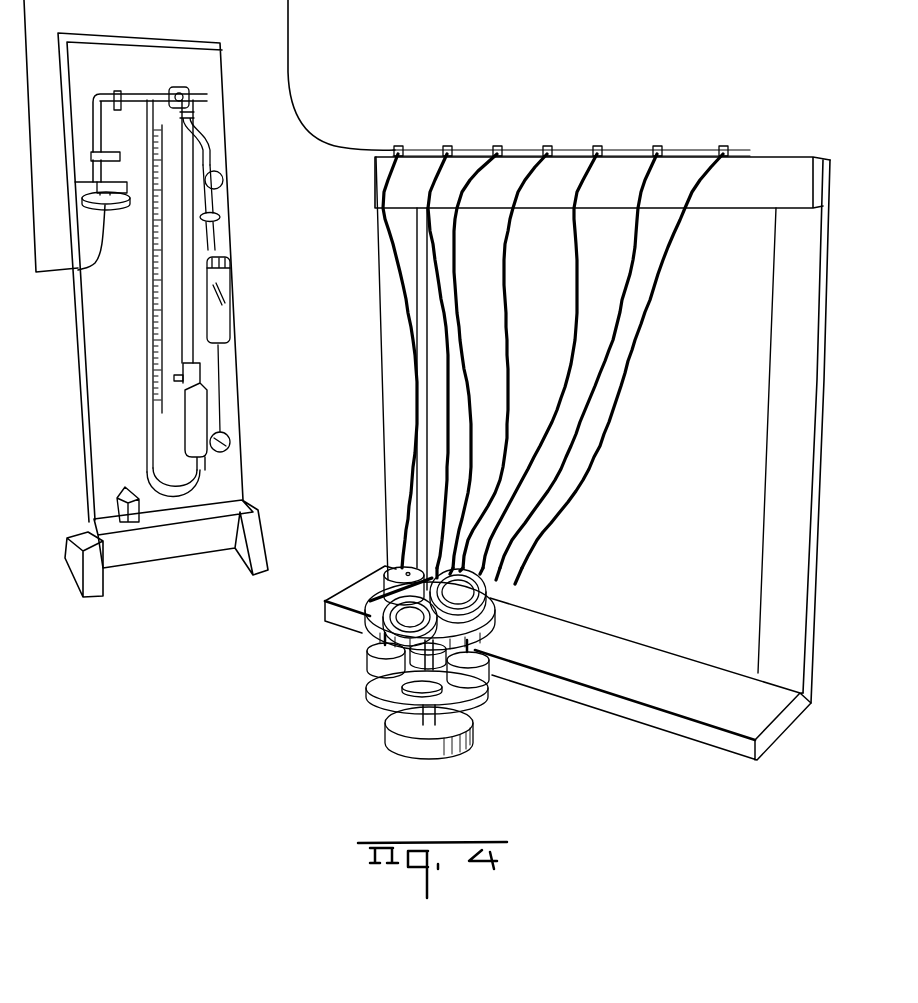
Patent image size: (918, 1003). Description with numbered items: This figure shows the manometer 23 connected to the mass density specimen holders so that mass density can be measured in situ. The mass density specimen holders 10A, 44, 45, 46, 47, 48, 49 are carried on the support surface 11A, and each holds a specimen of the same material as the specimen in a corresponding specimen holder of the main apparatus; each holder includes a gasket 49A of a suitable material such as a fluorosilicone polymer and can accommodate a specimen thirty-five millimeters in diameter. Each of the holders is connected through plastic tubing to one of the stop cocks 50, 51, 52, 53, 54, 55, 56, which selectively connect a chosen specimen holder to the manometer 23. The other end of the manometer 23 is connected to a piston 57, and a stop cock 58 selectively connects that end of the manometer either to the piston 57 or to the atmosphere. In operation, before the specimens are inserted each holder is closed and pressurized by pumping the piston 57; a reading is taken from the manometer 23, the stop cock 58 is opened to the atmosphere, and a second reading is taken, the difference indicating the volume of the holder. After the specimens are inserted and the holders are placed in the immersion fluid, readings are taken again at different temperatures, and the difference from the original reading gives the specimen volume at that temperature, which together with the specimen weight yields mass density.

The manometer 23 is at (143, 151).
The stop cock 58 is at (179, 88).
The piston 57 is at (233, 297).
The stop cock 50 is at (398, 146).
The stop cock 51 is at (447, 146).
The stop cock 52 is at (497, 146).
The stop cock 53 is at (547, 146).
The stop cock 54 is at (597, 146).
The stop cock 55 is at (657, 146).
The stop cock 56 is at (723, 146).
The mass density specimen holder 47 is at (392, 571).
The mass density specimen holder 48 is at (513, 568).
The gasket 49A is at (488, 606).
The mass density specimen holder 49 is at (458, 625).
The mass density specimen holder 46 is at (385, 630).
The mass density specimen holder 45 is at (462, 642).
The mass density specimen holder 10A is at (374, 668).
The mass density specimen holder 44 is at (487, 682).
The support surface 11A is at (400, 752).